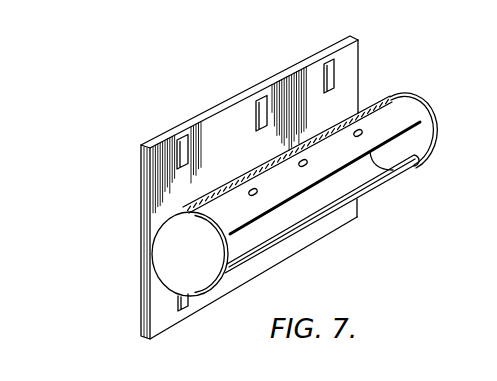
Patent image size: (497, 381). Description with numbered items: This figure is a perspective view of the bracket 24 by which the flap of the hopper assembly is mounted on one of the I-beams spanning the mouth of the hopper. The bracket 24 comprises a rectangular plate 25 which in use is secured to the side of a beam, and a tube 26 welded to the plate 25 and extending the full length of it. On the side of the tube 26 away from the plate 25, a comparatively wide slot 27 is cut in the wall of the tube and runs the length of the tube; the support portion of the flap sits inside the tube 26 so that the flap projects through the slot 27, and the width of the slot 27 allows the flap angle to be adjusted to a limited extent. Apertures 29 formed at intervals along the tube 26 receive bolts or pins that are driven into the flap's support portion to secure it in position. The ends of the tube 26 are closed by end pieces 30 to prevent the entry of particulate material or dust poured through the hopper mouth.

The bracket 24 is at (260, 183).
The rectangular plate 25 is at (348, 53).
The tube 26 is at (285, 174).
The slot 27 is at (355, 181).
The apertures 29 is at (361, 131).
The end pieces 30 is at (428, 122).